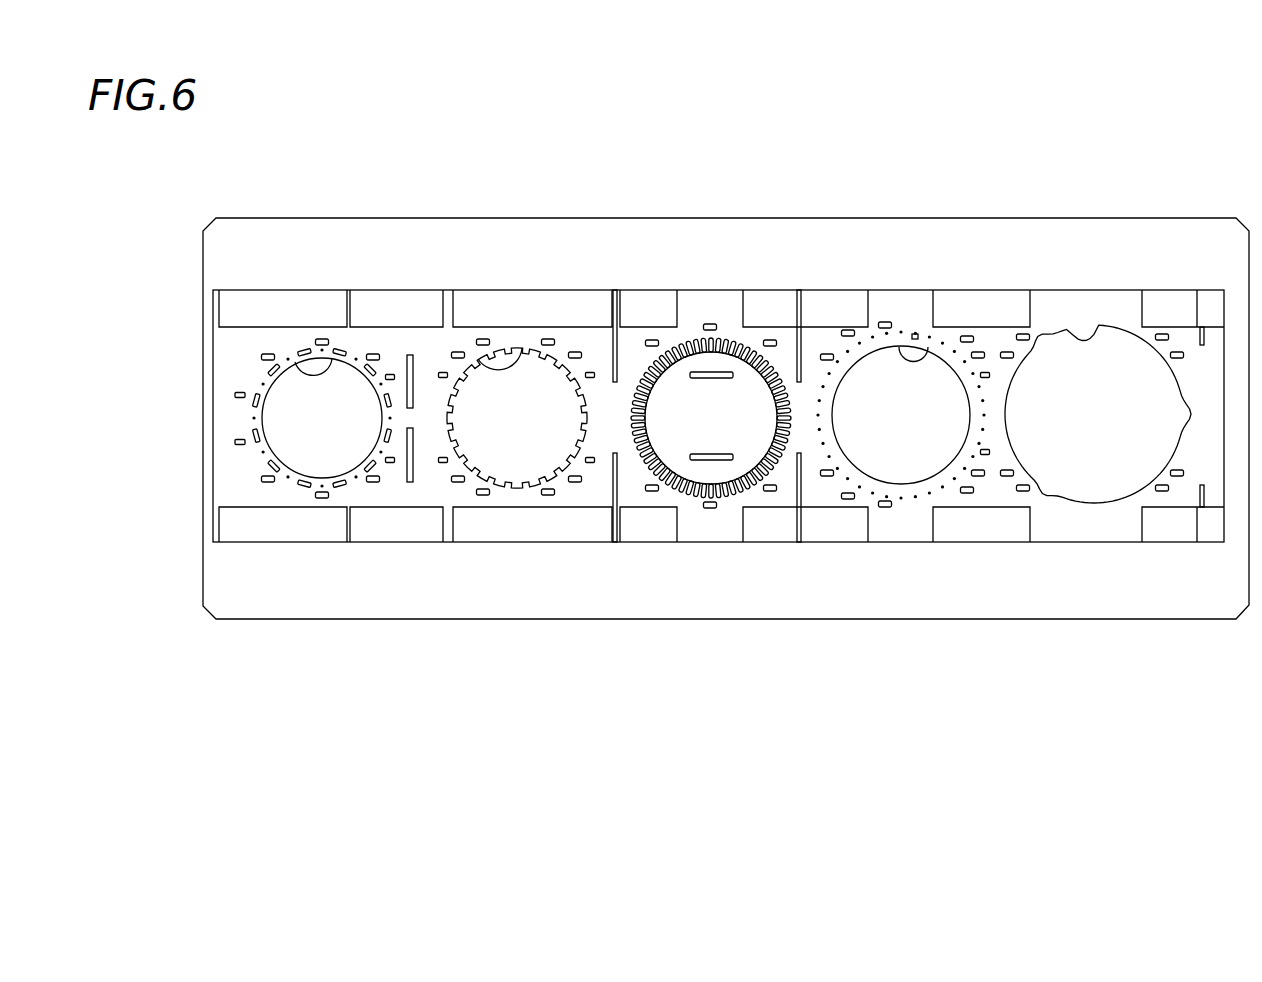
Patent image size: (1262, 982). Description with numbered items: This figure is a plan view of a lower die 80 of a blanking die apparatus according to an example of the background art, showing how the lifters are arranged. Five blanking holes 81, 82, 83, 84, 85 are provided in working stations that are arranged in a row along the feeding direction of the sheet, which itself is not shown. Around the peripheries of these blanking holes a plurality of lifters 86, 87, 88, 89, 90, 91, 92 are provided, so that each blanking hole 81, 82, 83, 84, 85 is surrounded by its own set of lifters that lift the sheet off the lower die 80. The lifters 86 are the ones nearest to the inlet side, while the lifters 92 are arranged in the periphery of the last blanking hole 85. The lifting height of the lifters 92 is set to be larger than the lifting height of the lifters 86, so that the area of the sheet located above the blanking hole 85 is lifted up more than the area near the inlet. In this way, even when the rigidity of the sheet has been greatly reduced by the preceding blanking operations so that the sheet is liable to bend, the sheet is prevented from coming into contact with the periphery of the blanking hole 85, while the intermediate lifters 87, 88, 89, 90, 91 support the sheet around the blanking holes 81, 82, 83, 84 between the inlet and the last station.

The lower die 80 is at (231, 633).
The blanking hole 81 is at (338, 353).
The blanking hole 82 is at (522, 346).
The blanking hole 83 is at (735, 335).
The blanking hole 84 is at (927, 348).
The blanking hole 85 is at (1100, 326).
The lifters 86 is at (234, 440).
The lifters 87 is at (268, 353).
The lifters 88 is at (443, 371).
The lifters 89 is at (458, 351).
The lifters 90 is at (652, 339).
The lifters 91 is at (827, 353).
The lifters 92 is at (1007, 351).